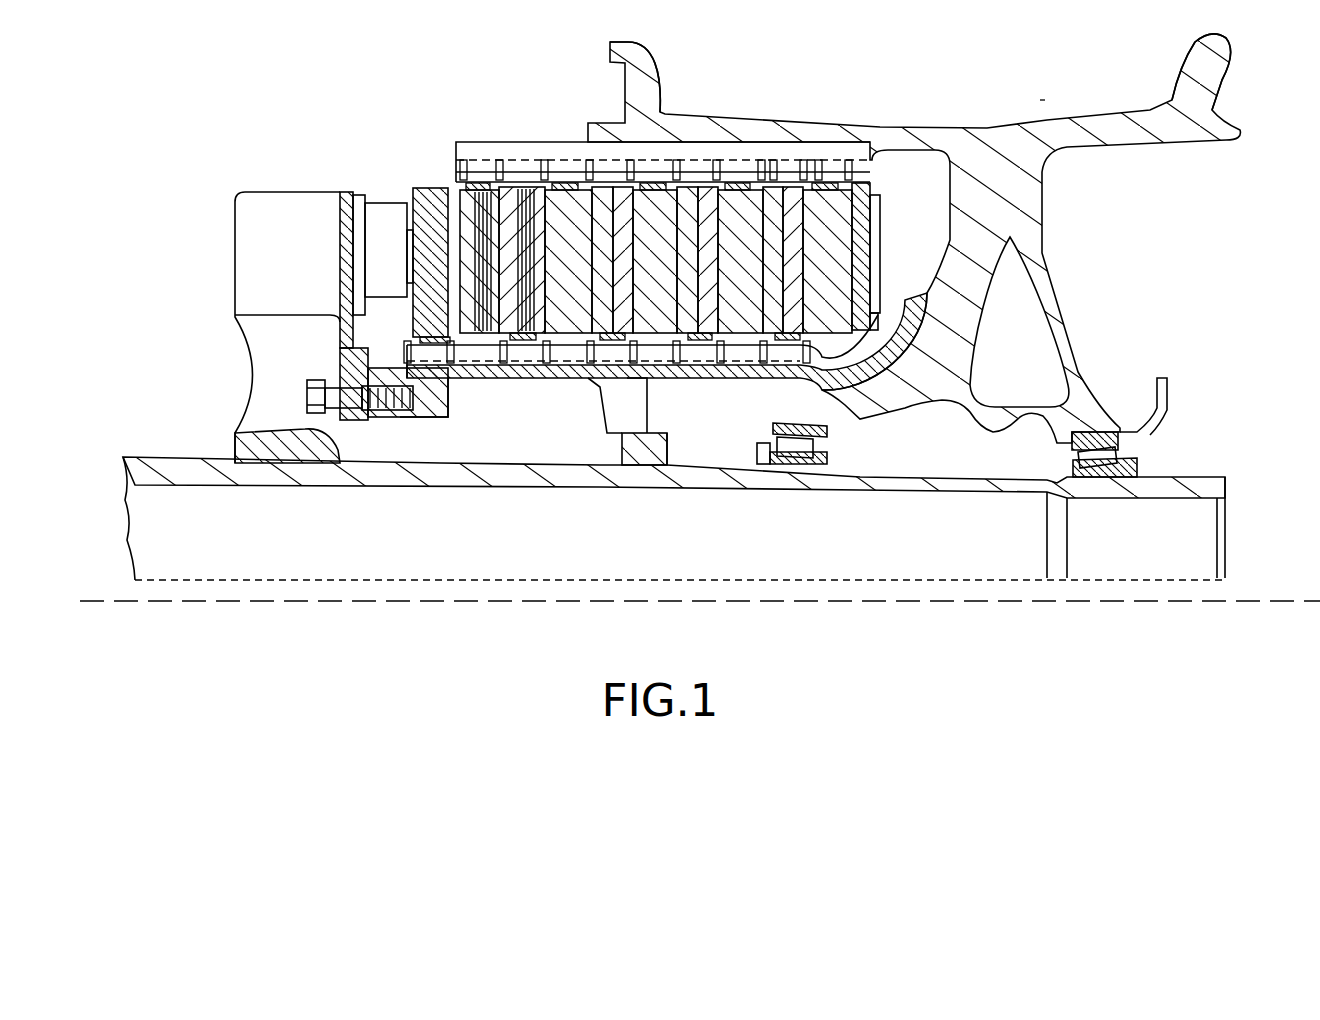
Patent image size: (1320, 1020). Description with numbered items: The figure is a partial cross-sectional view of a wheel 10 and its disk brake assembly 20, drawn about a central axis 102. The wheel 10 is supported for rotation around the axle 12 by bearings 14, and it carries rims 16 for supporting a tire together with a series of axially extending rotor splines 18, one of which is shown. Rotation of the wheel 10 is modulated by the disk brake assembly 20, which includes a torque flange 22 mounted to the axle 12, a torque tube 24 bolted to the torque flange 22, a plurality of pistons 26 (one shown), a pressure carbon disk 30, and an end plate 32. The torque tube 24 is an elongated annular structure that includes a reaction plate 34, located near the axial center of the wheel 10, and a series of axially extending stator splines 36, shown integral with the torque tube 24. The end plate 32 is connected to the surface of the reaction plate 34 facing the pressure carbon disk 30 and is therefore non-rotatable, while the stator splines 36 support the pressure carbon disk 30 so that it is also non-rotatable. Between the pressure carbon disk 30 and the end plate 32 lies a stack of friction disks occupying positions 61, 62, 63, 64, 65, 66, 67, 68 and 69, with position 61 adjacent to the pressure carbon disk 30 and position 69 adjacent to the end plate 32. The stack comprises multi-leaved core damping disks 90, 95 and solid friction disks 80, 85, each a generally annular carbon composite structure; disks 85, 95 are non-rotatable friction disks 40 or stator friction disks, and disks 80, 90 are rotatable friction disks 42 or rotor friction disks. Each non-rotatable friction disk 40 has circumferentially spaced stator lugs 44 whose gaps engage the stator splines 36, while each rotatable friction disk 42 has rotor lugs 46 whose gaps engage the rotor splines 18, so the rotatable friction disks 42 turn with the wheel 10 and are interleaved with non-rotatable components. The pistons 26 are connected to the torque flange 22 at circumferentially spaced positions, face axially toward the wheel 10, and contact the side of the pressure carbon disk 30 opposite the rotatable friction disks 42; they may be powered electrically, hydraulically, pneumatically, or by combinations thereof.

The wheel 10 is at (1049, 94).
The axle 12 is at (968, 484).
The bearings 14 is at (810, 441).
The rims 16 is at (648, 57).
The rotor splines 18 is at (600, 147).
The disk brake assembly 20 is at (383, 166).
The torque flange 22 is at (343, 362).
The torque tube 24 is at (508, 378).
The pistons 26 is at (390, 217).
The pressure carbon disk 30 is at (423, 188).
The end plate 32 is at (880, 152).
The reaction plate 34 is at (890, 292).
The stator splines 36 is at (568, 360).
The non-rotatable friction disk 40 is at (773, 155).
The rotatable friction disk 42 is at (470, 157).
The stator lugs 44 is at (498, 352).
The rotor lugs 46 is at (498, 160).
The friction disk position 61 is at (495, 198).
The friction disk position 62 is at (540, 198).
The friction disk position 63 is at (577, 198).
The friction disk position 64 is at (628, 198).
The friction disk position 65 is at (622, 195).
The friction disk position 66 is at (697, 198).
The friction disk position 67 is at (755, 198).
The friction disk position 68 is at (797, 198).
The friction disk position 69 is at (853, 198).
The solid friction disk 80 is at (634, 328).
The solid friction disk 85 is at (602, 338).
The multi-leaved core damping disk 90 is at (457, 330).
The multi-leaved core damping disk 95 is at (520, 352).
The axis 102 is at (1256, 598).